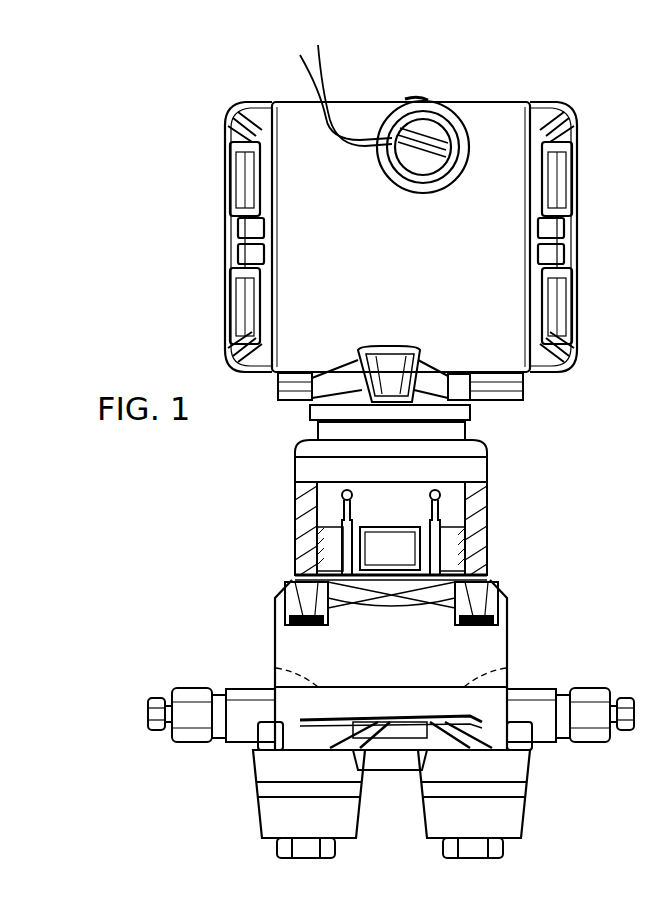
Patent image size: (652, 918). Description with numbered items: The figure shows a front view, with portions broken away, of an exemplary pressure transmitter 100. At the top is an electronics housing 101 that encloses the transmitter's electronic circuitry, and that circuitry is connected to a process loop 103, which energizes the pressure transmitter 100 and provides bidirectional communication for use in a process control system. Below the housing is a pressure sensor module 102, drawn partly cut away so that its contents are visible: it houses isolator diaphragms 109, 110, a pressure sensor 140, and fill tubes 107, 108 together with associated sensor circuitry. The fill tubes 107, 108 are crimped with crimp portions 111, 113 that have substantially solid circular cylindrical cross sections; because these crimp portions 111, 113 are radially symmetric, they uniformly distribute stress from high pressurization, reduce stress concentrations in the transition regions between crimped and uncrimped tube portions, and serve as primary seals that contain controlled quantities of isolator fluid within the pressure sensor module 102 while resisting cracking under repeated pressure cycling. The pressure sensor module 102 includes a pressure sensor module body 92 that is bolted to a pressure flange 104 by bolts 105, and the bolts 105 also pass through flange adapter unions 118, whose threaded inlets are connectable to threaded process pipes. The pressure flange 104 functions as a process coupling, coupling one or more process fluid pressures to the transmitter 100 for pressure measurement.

The pressure transmitter 100 is at (150, 72).
The electronics housing 101 is at (418, 272).
The pressure sensor module 102 is at (245, 620).
The process loop 103 is at (322, 55).
The pressure flange 104 is at (324, 716).
The bolts 105 is at (305, 610).
The fill tube 107 is at (340, 555).
The fill tube 108 is at (465, 565).
The isolator diaphragm 109 is at (278, 680).
The isolator diaphragm 110 is at (505, 680).
The crimp portion 111 is at (344, 500).
The crimp portion 113 is at (440, 500).
The flange adapter union 118 is at (328, 832).
The pressure sensor 140 is at (411, 562).
The pressure sensor module body 92 is at (406, 672).